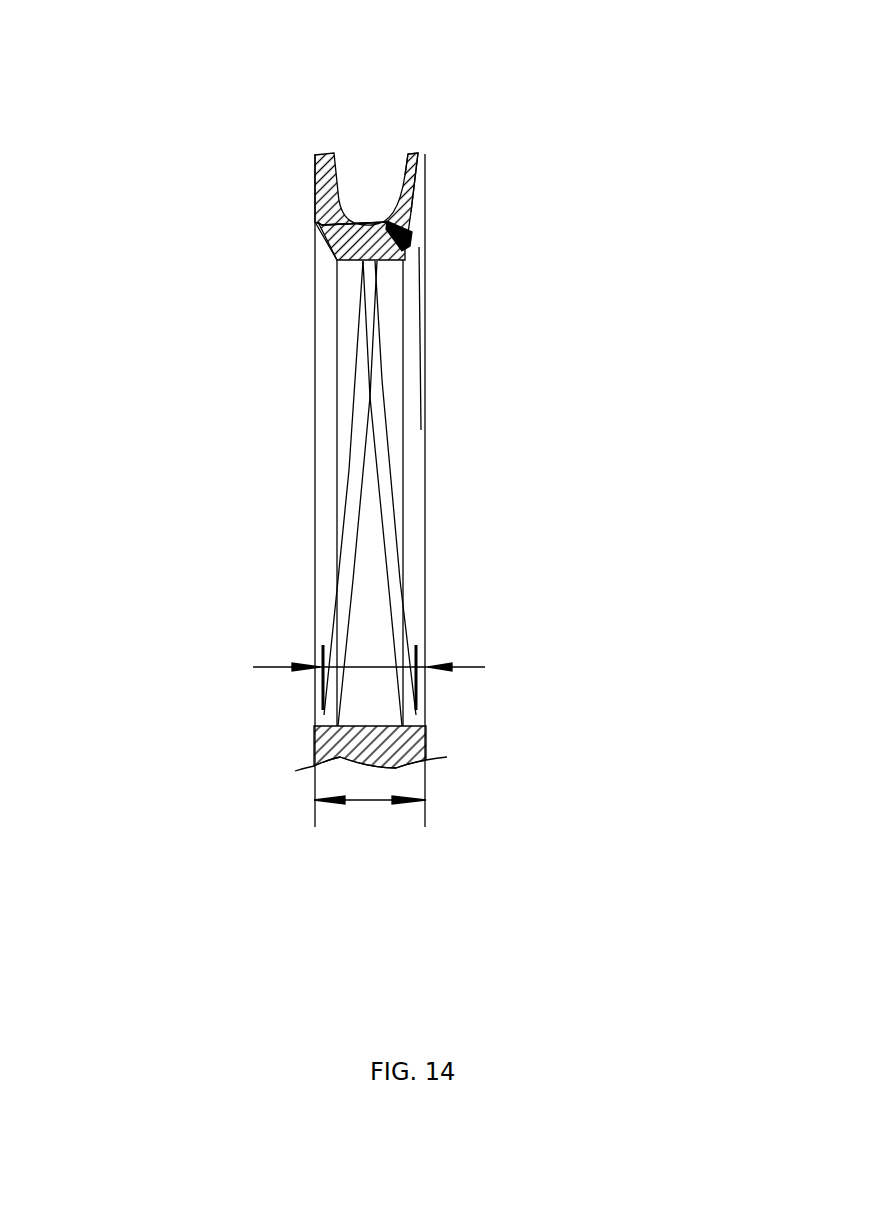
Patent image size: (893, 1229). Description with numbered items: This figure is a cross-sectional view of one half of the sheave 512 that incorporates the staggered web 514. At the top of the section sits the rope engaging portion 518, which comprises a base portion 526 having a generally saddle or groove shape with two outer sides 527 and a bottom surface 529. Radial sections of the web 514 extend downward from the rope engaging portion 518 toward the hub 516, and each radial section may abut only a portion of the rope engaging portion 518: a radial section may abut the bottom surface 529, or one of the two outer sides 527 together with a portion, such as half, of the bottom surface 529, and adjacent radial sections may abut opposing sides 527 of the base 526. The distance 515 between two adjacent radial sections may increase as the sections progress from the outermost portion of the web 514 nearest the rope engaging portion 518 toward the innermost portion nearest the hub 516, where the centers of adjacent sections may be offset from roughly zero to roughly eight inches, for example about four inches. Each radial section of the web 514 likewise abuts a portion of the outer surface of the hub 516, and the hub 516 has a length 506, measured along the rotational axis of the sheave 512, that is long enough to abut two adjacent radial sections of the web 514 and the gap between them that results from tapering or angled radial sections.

The sheave 512 is at (170, 227).
The rope engaging portion 518 is at (358, 158).
The base portion 526 is at (416, 160).
The outer sides 527 is at (418, 209).
The bottom surface 529 is at (378, 262).
The staggered web 514 is at (383, 415).
The distance 515 is at (366, 667).
The hub 516 is at (426, 739).
The length 506 is at (377, 804).